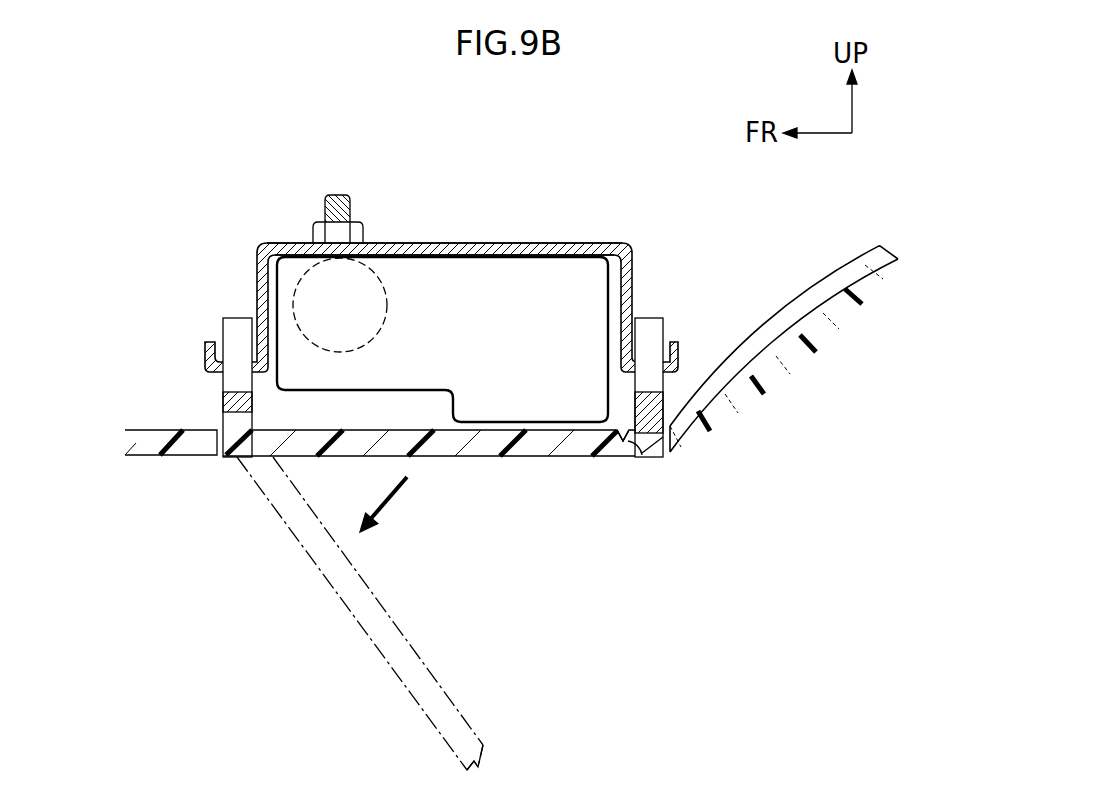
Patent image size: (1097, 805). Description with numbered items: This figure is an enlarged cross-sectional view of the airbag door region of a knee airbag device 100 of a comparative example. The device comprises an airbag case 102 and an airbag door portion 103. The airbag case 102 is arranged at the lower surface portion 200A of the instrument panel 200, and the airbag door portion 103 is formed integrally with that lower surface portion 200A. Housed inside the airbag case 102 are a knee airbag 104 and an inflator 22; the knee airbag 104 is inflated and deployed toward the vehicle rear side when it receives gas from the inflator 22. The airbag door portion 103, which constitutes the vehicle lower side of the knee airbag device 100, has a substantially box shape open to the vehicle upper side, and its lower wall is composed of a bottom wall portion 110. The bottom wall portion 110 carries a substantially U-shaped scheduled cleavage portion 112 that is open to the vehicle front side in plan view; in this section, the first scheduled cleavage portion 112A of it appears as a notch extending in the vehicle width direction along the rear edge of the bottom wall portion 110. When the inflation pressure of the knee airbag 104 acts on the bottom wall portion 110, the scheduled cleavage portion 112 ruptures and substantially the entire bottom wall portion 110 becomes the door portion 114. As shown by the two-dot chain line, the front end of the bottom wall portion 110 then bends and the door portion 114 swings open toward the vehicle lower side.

The knee airbag device 100 is at (580, 174).
The airbag case 102 is at (623, 245).
The knee airbag 104 is at (523, 247).
The inflator 22 is at (386, 290).
The bottom wall portion 110 is at (263, 427).
The airbag door portion 103 is at (557, 463).
The first scheduled cleavage portion 112A is at (805, 548).
The scheduled cleavage portion 112 is at (623, 435).
The door portion 114 is at (445, 458).
The instrument panel 200 is at (820, 364).
The lower surface portion 200A is at (157, 457).